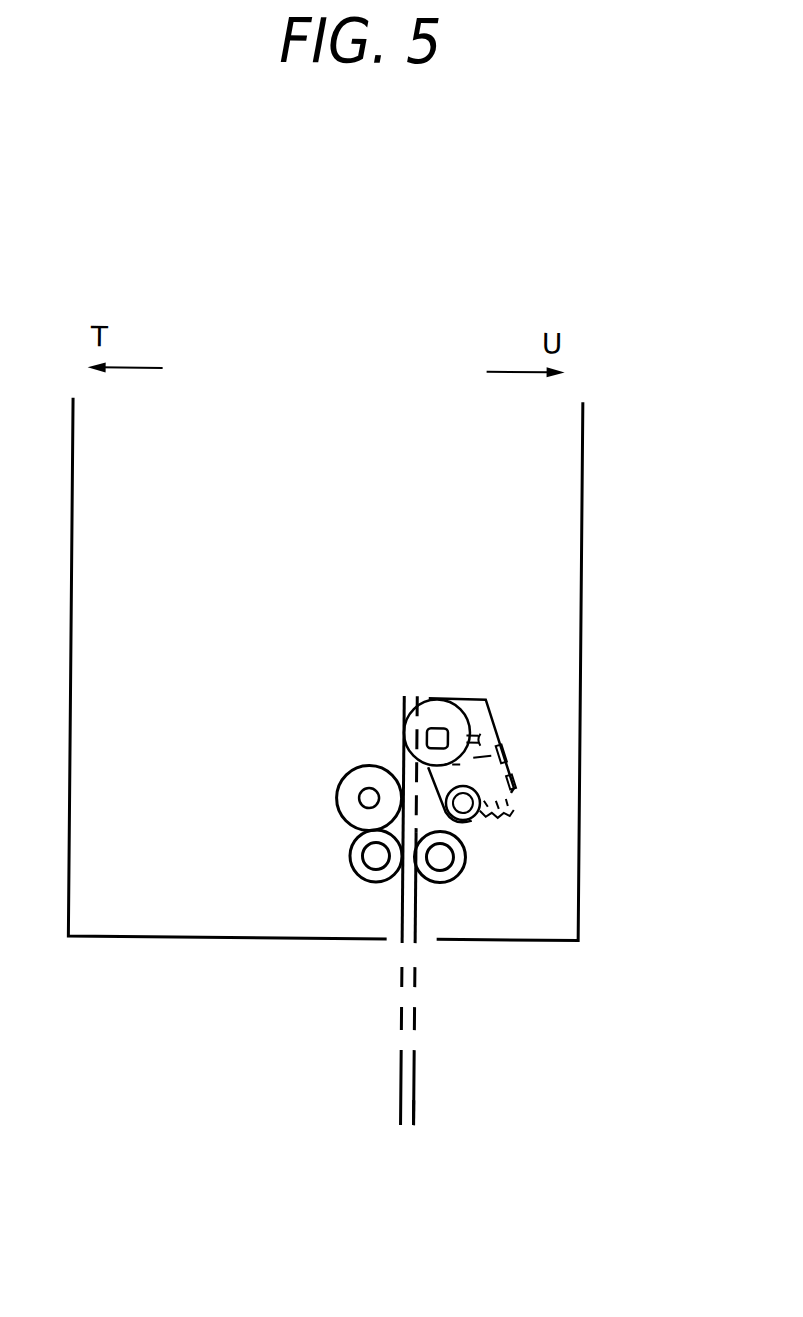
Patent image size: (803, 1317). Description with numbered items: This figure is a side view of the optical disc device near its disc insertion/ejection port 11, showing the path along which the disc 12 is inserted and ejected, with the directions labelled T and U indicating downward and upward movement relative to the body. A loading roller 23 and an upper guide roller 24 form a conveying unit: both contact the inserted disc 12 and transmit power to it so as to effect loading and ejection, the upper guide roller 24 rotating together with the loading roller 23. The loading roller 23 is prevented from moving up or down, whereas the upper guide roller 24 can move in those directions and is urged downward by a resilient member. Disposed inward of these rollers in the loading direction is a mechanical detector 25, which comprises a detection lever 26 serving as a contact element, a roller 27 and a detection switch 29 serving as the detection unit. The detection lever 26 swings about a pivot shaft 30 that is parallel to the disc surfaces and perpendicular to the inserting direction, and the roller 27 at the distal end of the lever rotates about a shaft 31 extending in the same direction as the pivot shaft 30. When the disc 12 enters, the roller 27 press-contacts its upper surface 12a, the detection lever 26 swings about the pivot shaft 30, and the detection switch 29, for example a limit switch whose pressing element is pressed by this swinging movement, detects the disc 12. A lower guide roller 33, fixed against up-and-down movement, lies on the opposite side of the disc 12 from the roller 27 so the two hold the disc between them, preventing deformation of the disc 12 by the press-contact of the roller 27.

The disc insertion/ejection port 11 is at (388, 941).
The disc 12 is at (416, 1066).
The upper surface 12a is at (417, 1104).
The loading roller 23 is at (350, 860).
The upper guide roller 24 is at (466, 853).
The mechanical detector 25 is at (518, 710).
The detection lever 26 is at (489, 691).
The roller 27 is at (436, 700).
The detection switch 29 is at (516, 811).
The pivot shaft 30 is at (479, 787).
The shaft 31 is at (439, 730).
The lower guide roller 33 is at (336, 802).